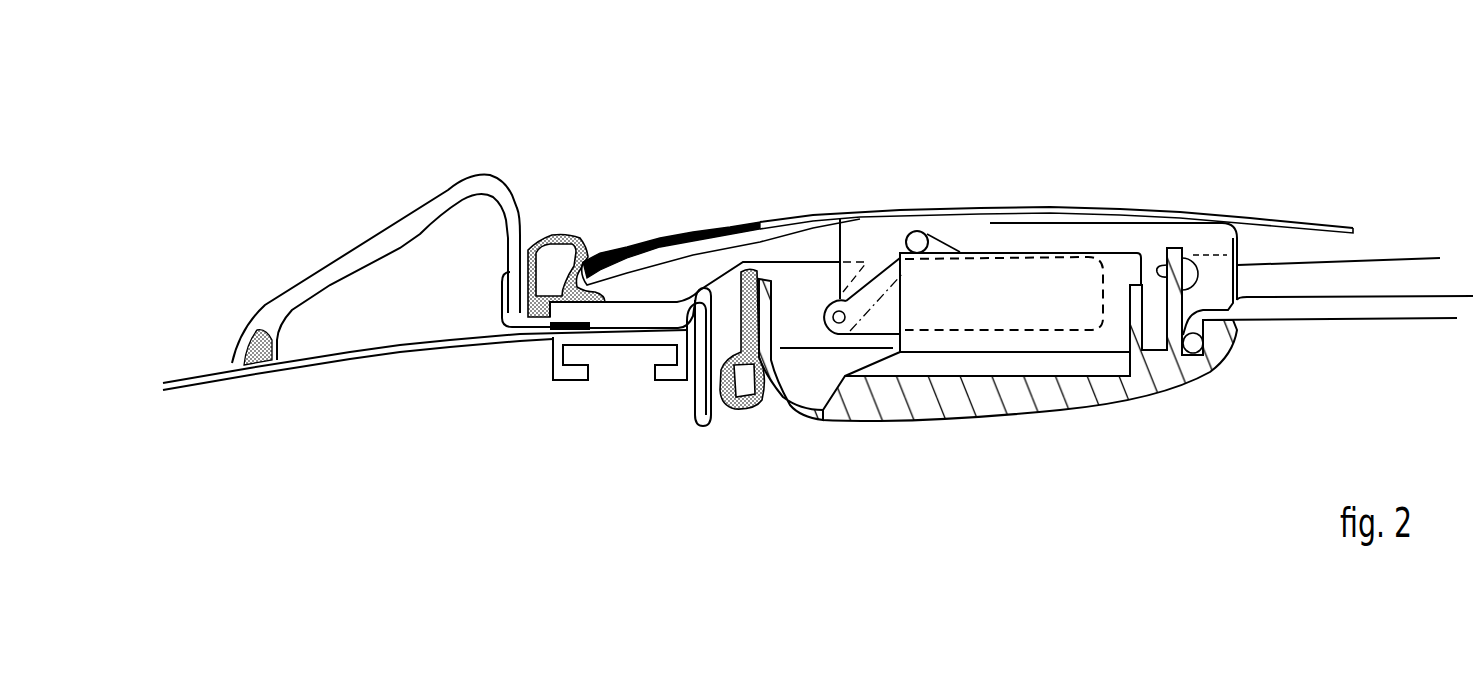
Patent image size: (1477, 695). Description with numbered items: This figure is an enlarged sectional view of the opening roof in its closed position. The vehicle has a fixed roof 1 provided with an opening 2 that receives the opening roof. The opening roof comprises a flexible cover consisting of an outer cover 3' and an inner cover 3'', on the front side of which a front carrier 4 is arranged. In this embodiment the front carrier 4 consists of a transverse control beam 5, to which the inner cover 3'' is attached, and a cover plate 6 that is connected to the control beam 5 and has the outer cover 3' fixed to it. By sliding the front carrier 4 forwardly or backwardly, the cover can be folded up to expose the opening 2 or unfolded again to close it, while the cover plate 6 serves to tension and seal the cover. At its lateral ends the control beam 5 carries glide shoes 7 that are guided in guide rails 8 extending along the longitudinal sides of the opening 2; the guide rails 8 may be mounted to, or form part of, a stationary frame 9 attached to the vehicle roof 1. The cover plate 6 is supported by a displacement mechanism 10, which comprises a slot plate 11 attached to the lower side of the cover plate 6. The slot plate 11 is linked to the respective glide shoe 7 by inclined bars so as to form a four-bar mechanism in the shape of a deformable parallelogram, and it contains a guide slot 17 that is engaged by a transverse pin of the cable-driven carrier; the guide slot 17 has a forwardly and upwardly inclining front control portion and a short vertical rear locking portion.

The fixed roof 1 is at (372, 352).
The opening 2 is at (737, 423).
The outer cover 3' is at (1328, 179).
The inner cover 3'' is at (1330, 428).
The front carrier 4 is at (1168, 207).
The control beam 5 is at (1027, 400).
The cover plate 6 is at (813, 220).
The glide shoe 7 is at (967, 340).
The guide rail 8 is at (821, 338).
The stationary frame 9 is at (634, 317).
The displacement mechanism 10 is at (1067, 205).
The slot plate 11 is at (987, 220).
The guide slot 17 is at (930, 236).